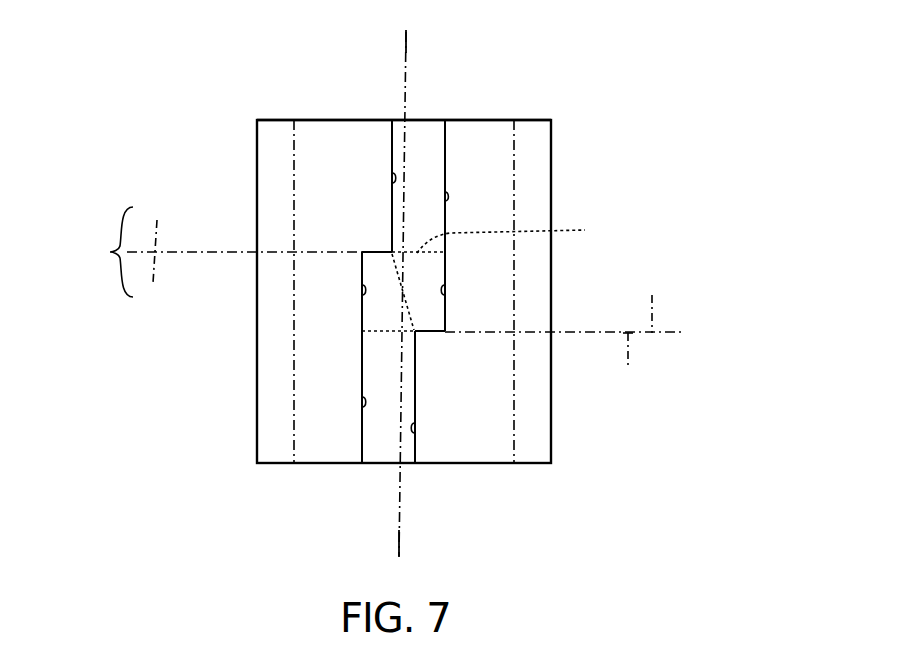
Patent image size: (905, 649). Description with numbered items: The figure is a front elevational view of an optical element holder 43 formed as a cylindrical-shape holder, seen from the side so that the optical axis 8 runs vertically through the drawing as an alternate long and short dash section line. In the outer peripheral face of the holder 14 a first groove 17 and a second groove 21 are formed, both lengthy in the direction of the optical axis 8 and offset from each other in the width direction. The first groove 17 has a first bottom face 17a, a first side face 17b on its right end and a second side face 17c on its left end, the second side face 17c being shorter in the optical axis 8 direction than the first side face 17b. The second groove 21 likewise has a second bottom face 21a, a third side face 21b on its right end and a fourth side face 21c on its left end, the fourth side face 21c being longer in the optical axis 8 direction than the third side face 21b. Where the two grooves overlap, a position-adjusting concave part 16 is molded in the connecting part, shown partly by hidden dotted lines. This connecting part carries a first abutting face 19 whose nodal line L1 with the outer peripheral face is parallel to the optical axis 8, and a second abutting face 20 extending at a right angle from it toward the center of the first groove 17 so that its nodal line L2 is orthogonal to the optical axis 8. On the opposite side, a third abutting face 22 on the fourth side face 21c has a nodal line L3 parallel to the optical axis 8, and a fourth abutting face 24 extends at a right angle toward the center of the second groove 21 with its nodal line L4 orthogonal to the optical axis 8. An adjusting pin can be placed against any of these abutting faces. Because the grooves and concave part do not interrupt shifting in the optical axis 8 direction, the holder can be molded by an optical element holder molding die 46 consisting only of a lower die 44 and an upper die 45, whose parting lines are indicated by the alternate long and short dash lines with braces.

The optical axis 8 is at (403, 43).
The holder 14 is at (326, 120).
The position-adjusting concave part 16 is at (520, 235).
The first groove 17 is at (420, 138).
The first bottom face 17a is at (430, 149).
The first side face 17b is at (447, 197).
The second side face 17c is at (392, 173).
The first abutting face 19 is at (447, 283).
The second abutting face 20 is at (447, 316).
The second groove 21 is at (382, 447).
The second bottom face 21a is at (375, 428).
The third side face 21b is at (418, 426).
The fourth side face 21c is at (362, 397).
The third abutting face 22 is at (362, 296).
The fourth abutting face 24 is at (385, 254).
The optical element holder 43 is at (243, 118).
The lower die 44 is at (404, 321).
The upper die 45 is at (403, 266).
The optical element holder molding die 46 is at (104, 264).
The nodal line L1 is at (447, 268).
The nodal line L2 is at (445, 333).
The nodal line L3 is at (362, 315).
The nodal line L4 is at (373, 250).